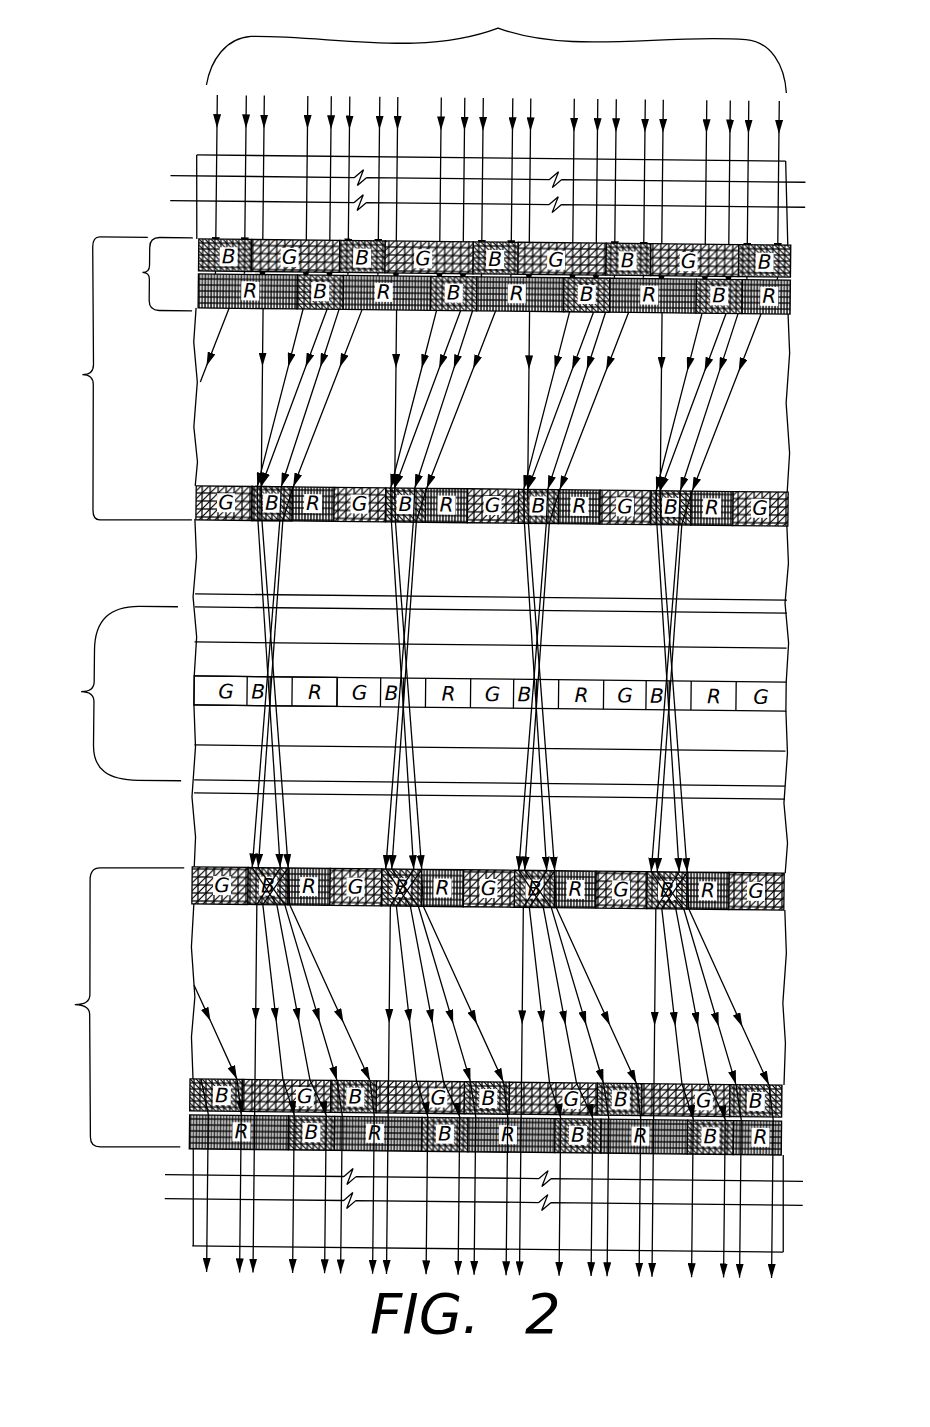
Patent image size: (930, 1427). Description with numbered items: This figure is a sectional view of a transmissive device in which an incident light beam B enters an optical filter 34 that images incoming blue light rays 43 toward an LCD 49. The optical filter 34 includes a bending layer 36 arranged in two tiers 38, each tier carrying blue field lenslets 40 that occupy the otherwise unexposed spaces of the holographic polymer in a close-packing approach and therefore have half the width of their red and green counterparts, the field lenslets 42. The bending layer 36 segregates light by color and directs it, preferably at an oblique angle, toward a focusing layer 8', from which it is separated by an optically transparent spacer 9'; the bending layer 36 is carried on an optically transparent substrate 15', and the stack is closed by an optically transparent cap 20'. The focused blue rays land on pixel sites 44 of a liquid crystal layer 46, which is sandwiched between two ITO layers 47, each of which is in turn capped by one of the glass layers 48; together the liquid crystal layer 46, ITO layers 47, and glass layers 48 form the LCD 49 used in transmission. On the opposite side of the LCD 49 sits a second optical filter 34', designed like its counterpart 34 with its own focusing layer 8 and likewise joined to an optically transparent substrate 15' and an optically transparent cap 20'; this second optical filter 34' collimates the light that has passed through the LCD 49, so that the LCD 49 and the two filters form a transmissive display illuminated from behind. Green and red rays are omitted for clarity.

The incident light beam B is at (496, 46).
The incoming blue light rays 43 is at (749, 149).
The optically transparent substrate 15' is at (456, 692).
The optical filter 34 is at (413, 385).
The bending layer 36 is at (448, 281).
The tiers 38 is at (195, 293).
The blue field lenslets 40 is at (503, 248).
The field lenslets 42 is at (681, 256).
The transparent spacer 9' is at (172, 676).
The focusing layer 8' is at (460, 501).
The focusing layer 8 is at (309, 526).
The optically transparent cap 20' is at (463, 696).
The LCD 49 is at (415, 696).
The glass layers 48 is at (213, 624).
The ITO layers 47 is at (213, 656).
The liquid crystal layer 46 is at (196, 691).
The pixel sites 44 is at (285, 710).
The second optical filter 34' is at (409, 1010).